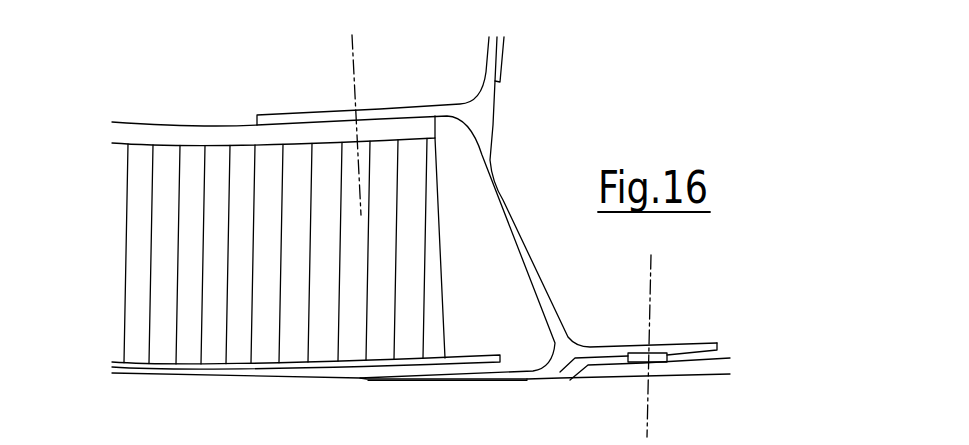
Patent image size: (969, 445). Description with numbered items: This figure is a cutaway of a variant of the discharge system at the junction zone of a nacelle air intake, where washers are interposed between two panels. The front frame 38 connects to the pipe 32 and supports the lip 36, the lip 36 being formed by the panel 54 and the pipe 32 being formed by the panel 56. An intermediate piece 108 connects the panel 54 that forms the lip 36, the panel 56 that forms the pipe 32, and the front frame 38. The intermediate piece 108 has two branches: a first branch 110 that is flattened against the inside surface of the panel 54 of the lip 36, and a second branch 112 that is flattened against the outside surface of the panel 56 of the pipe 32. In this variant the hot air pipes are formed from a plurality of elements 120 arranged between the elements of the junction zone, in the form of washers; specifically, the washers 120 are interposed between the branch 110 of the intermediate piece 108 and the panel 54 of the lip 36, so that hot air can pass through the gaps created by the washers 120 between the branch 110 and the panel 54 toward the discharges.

The pipe 32 is at (220, 376).
The panel 56 is at (152, 374).
The second branch 112 is at (460, 380).
The panel 54 is at (656, 376).
The intermediate piece 108 is at (503, 176).
The front frame 38 is at (504, 53).
The first branch 110 is at (600, 349).
The washers 120 is at (658, 358).
The lip 36 is at (725, 376).